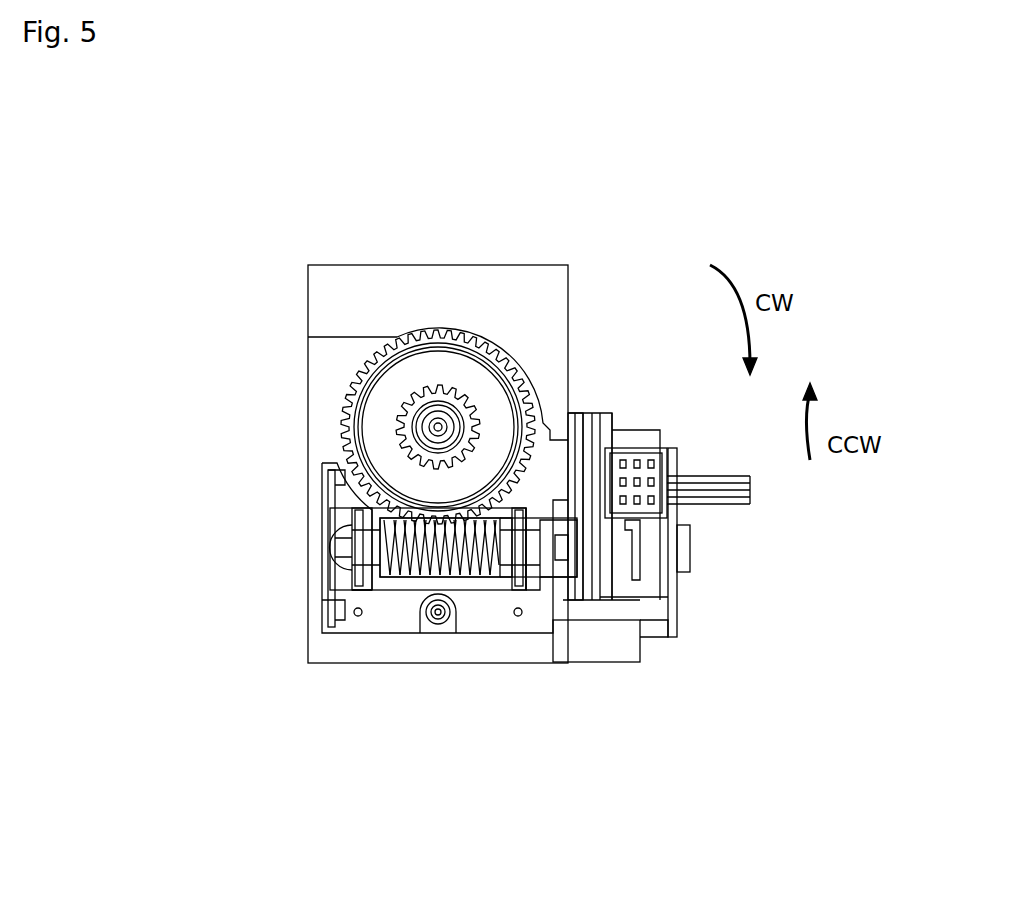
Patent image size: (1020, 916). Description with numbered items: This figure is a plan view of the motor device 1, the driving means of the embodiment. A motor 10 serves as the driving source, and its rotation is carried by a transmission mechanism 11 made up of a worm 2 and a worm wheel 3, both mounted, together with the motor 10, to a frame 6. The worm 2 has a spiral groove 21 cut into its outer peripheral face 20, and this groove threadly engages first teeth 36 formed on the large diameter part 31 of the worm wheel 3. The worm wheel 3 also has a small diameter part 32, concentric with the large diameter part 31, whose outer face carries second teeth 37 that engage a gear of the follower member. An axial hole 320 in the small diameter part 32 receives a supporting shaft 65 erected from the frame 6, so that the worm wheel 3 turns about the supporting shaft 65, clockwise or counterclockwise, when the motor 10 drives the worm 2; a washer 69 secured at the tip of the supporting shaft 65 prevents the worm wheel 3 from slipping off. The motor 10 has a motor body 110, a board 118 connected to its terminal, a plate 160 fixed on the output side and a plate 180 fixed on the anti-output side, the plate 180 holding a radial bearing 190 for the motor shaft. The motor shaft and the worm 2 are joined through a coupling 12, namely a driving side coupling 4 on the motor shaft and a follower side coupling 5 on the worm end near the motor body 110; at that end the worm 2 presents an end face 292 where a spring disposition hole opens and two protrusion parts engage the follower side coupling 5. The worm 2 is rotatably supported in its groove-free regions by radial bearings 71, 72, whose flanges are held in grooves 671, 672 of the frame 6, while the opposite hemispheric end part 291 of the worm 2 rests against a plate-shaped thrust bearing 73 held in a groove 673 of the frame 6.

The motor device 1 is at (566, 221).
The frame 6 is at (308, 315).
The large diameter part 31 is at (356, 427).
The first teeth 36 is at (345, 408).
The small diameter part 32 is at (328, 427).
The second teeth 37 is at (400, 428).
The worm wheel 3 is at (385, 450).
The supporting shaft 65 is at (460, 418).
The washer 69 is at (445, 426).
The end face 292 is at (515, 530).
The transmission mechanism 11 is at (147, 475).
The worm 2 is at (345, 552).
The end part 291 is at (330, 542).
The follower side coupling 5 is at (515, 580).
The driving side coupling 4 is at (577, 577).
The coupling 12 is at (548, 732).
The thrust bearing 73 is at (355, 562).
The radial bearing 72 is at (335, 572).
The groove 672 is at (331, 598).
The groove 673 is at (322, 622).
The outer peripheral face 20 is at (444, 602).
The spiral groove 21 is at (368, 590).
The radial bearing 71 is at (428, 622).
The groove 671 is at (490, 575).
The motor 10 is at (654, 641).
The plate 160 is at (590, 605).
The axial hole 320 is at (515, 432).
The board 118 is at (640, 452).
The plate 180 is at (680, 607).
The radial bearing 190 is at (690, 555).
The motor body 110 is at (660, 637).